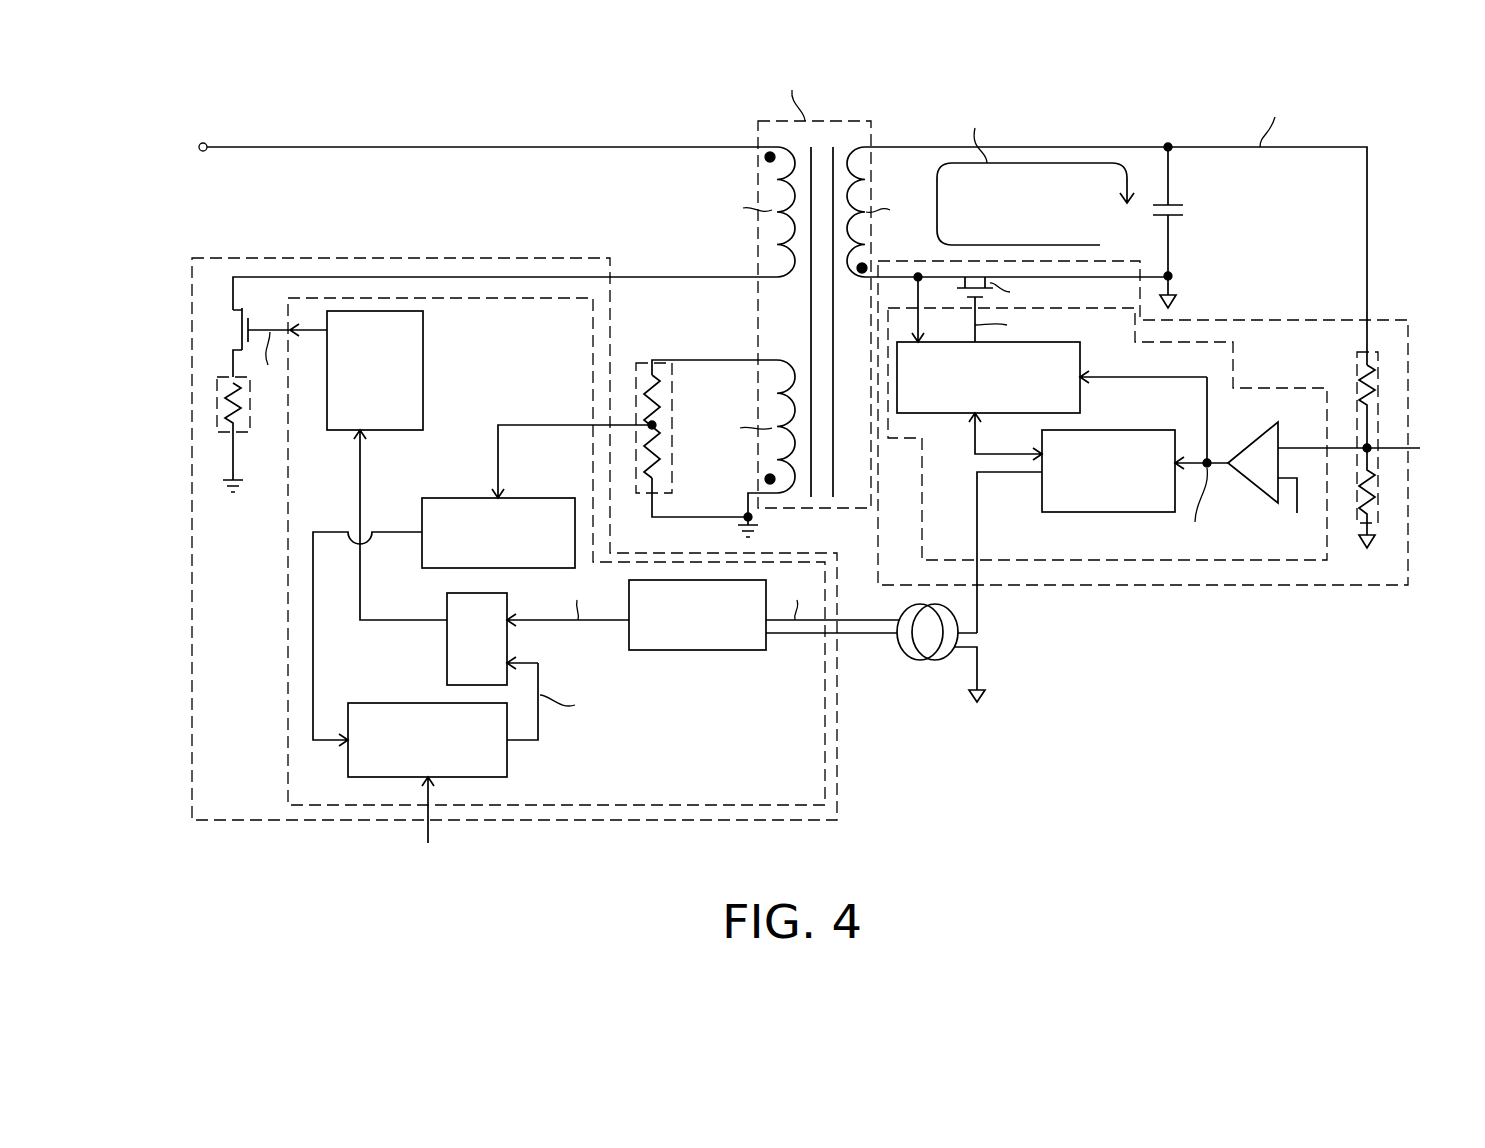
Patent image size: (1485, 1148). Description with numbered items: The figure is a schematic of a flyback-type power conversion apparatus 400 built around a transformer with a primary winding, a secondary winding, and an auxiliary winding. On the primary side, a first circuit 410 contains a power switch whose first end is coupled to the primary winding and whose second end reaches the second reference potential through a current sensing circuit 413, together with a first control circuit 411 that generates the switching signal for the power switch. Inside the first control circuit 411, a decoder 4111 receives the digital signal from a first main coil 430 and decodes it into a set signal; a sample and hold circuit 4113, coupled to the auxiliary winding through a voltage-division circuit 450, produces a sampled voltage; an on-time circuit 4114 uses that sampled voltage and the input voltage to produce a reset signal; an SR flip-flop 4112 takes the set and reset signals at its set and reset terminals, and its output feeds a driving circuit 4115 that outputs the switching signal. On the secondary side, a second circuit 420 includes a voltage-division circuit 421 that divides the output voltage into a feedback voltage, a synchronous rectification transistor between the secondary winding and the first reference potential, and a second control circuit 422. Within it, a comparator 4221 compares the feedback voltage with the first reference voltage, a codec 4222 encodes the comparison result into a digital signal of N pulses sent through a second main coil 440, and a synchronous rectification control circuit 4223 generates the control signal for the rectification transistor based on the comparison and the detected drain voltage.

The power conversion apparatus 400 is at (787, 469).
The first circuit 410 is at (192, 305).
The first control circuit 411 is at (288, 672).
The current sensing circuit 413 is at (217, 410).
The decoder 4111 is at (730, 650).
The SR flip-flop 4112 is at (447, 665).
The sample and hold circuit 4113 is at (452, 498).
The on-time circuit 4114 is at (507, 762).
The driving circuit 4115 is at (423, 352).
The second circuit 420 is at (1315, 320).
The voltage-division circuit 421 is at (1378, 390).
The second control circuit 422 is at (1272, 388).
The comparator 4221 is at (1250, 445).
The codec 4222 is at (1098, 512).
The synchronous rectification control circuit 4223 is at (1080, 397).
The first main coil 430 is at (913, 660).
The second main coil 440 is at (948, 613).
The voltage-division circuit 450 is at (672, 388).